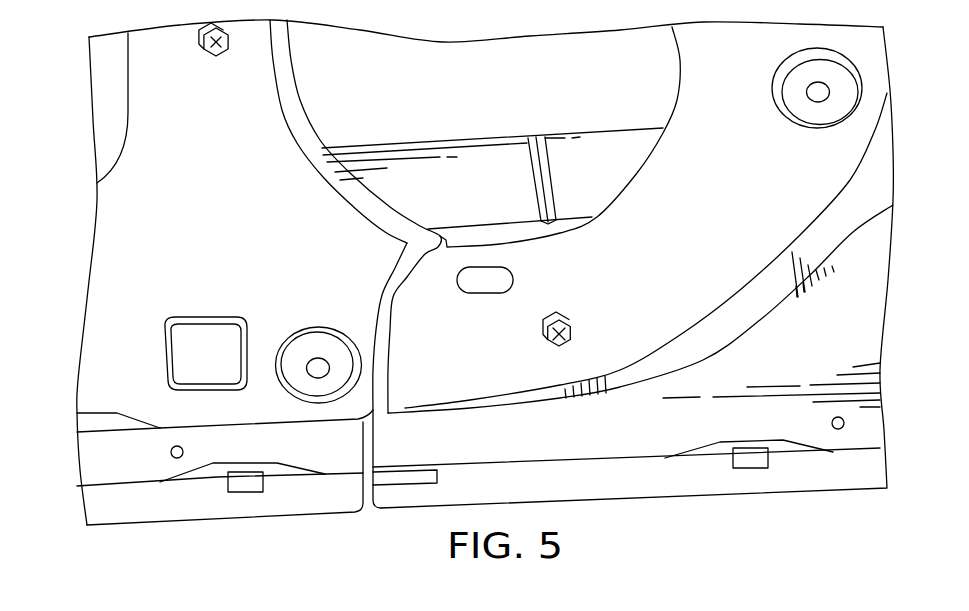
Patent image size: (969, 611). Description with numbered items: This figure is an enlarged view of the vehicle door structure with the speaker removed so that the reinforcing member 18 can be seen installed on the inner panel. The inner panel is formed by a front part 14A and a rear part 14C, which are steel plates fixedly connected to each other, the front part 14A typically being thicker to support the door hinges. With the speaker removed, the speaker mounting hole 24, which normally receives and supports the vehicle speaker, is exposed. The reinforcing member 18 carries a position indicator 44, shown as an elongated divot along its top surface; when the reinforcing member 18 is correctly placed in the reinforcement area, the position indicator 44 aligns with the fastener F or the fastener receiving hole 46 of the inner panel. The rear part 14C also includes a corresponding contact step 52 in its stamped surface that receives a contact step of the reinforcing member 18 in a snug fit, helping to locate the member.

The front part 14A is at (883, 327).
The rear part 14C is at (76, 373).
The reinforcing member 18 is at (396, 132).
The speaker mounting hole 24 is at (300, 95).
The position indicator 44 is at (536, 133).
The fastener receiving hole 46 is at (575, 325).
The corresponding contact step 52 is at (202, 347).
The fastener F is at (565, 347).